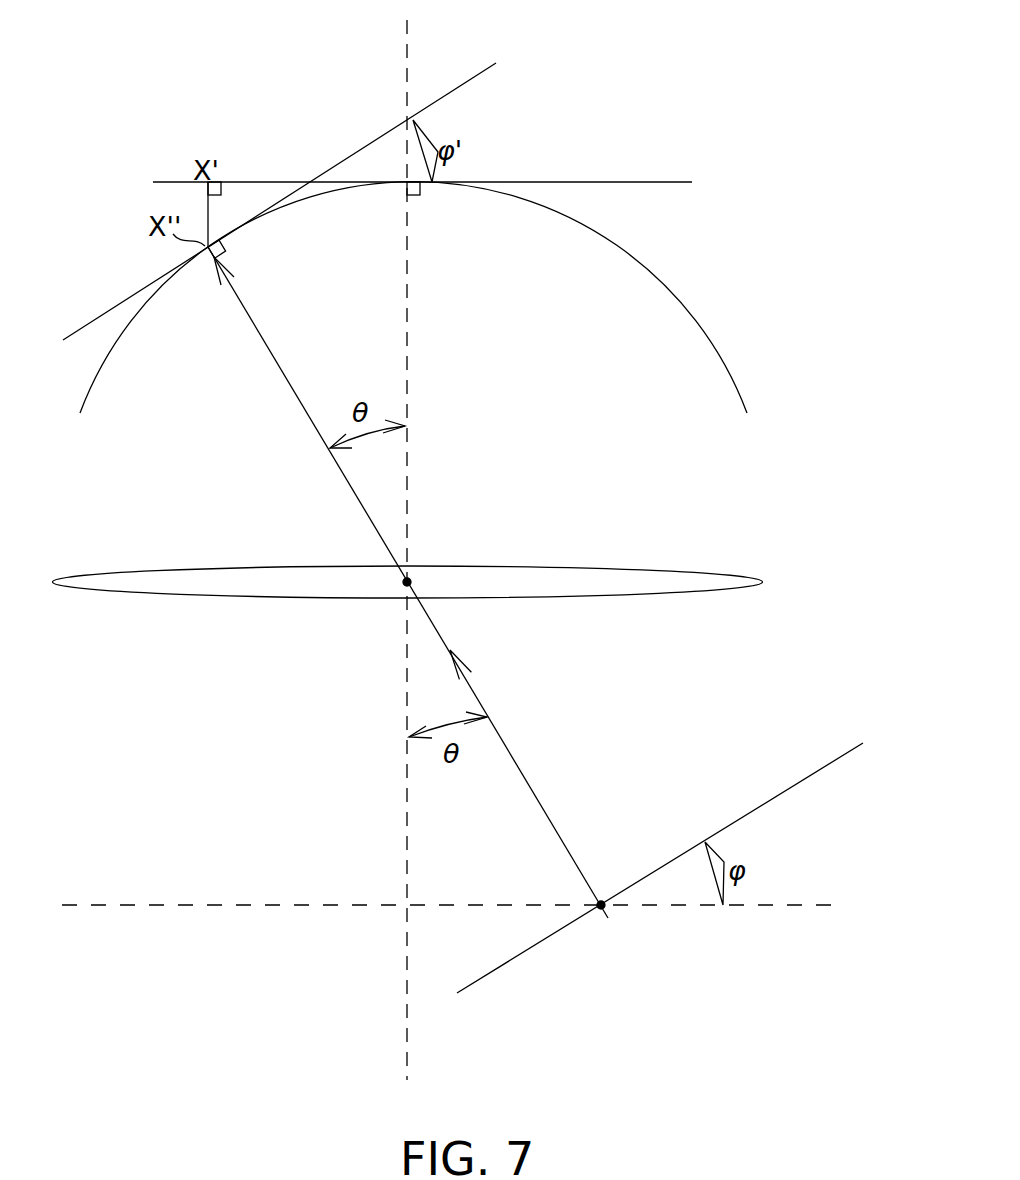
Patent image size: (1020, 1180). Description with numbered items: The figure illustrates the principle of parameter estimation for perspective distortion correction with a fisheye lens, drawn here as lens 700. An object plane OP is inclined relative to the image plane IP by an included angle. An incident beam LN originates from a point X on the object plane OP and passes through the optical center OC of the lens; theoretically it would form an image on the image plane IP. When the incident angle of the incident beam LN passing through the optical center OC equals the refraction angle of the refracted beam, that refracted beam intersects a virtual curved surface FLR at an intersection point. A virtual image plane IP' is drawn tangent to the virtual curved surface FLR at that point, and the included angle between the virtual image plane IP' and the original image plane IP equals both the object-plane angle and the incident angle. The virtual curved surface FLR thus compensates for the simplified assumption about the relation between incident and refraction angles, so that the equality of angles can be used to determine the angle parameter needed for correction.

The lens 700 is at (248, 565).
The image plane IP is at (437, 183).
The virtual image plane IP' is at (299, 188).
The virtual curved surface FLR is at (688, 312).
The optical center OC is at (410, 578).
The incident beam LN is at (408, 582).
The point X is at (601, 888).
The object plane OP is at (681, 857).